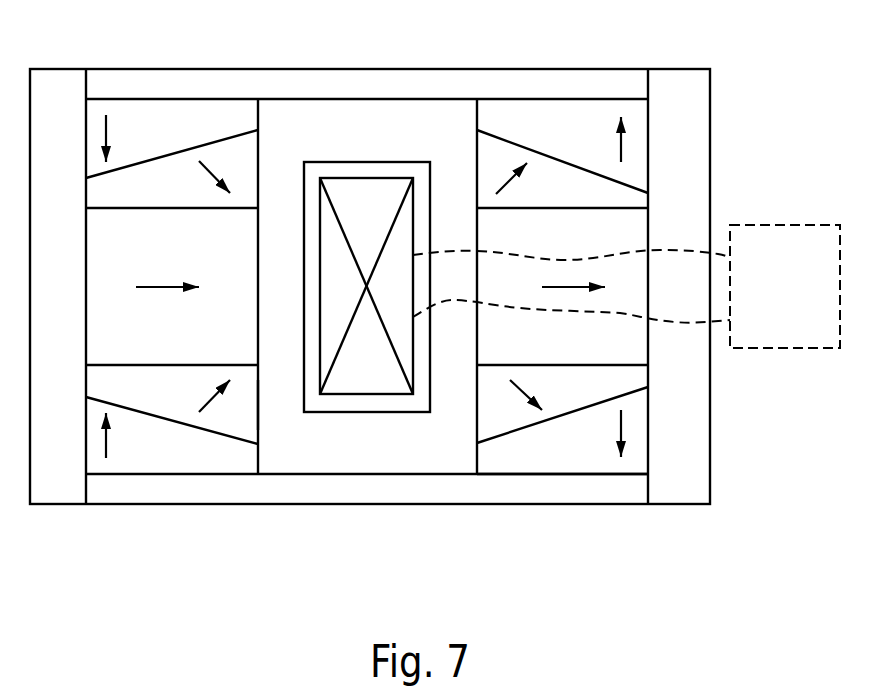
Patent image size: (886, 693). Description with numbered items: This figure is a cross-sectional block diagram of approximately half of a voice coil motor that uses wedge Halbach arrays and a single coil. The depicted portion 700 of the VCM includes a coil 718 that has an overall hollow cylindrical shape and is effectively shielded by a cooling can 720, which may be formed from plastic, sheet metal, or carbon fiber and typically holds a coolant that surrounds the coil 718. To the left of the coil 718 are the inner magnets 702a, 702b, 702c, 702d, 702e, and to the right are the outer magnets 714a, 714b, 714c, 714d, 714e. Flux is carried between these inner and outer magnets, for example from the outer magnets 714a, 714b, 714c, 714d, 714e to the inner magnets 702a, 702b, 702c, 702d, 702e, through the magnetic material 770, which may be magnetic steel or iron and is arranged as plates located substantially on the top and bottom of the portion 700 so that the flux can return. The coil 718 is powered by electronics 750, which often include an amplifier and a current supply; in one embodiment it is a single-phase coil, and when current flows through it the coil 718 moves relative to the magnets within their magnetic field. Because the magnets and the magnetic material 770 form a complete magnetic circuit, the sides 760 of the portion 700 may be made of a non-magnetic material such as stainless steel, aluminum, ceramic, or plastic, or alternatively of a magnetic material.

The portion of a VCM 700 is at (137, 602).
The inner magnet 702a is at (211, 117).
The inner magnet 702b is at (259, 165).
The inner magnet 702c is at (257, 273).
The inner magnet 702d is at (259, 407).
The inner magnet 702e is at (232, 462).
The outer magnet 714a is at (476, 130).
The outer magnet 714b is at (475, 180).
The outer magnet 714c is at (477, 347).
The outer magnet 714d is at (648, 376).
The outer magnet 714e is at (558, 475).
The coil 718 is at (387, 397).
The cooling can 720 is at (340, 412).
The electronics 750 is at (745, 225).
The sides 760 is at (52, 493).
The magnetic material 770 is at (473, 85).